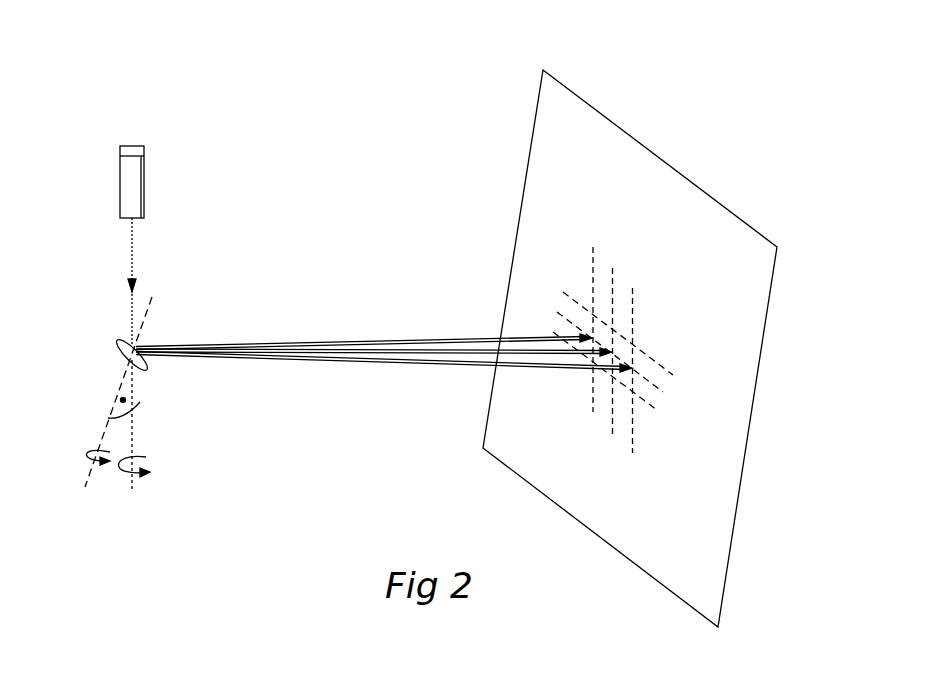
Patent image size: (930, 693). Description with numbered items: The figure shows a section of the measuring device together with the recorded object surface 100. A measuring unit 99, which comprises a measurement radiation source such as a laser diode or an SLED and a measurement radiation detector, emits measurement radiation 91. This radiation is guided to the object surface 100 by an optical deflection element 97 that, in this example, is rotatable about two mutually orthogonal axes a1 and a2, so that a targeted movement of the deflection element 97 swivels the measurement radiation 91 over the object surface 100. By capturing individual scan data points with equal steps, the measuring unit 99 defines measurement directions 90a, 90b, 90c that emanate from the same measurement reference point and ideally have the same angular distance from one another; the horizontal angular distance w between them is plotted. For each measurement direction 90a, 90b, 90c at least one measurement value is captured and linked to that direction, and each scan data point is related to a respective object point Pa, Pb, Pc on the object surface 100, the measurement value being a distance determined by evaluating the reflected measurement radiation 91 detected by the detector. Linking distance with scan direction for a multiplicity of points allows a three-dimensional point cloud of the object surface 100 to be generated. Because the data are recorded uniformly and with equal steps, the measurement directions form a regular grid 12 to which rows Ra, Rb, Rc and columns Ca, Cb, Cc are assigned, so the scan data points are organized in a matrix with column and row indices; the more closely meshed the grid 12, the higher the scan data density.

The measuring unit 99 is at (145, 160).
The measurement radiation 91 is at (132, 248).
The optical deflection element 97 is at (146, 367).
The first rotation axis a1 is at (137, 433).
The second rotation axis a2 is at (108, 425).
The first measurement direction 90a is at (425, 342).
The second measurement direction 90b is at (415, 354).
The third measurement direction 90c is at (445, 362).
The horizontal angular distance w is at (498, 361).
The object surface 100 is at (630, 348).
The regular grid 12 is at (713, 331).
The first column Ca is at (637, 310).
The second column Cb is at (665, 335).
The third column Cc is at (689, 357).
The first row Ra is at (683, 333).
The second row Rb is at (663, 392).
The third row Rc is at (677, 386).
The first object point Pa is at (555, 301).
The second object point Pb is at (568, 414).
The third object point Pc is at (660, 431).